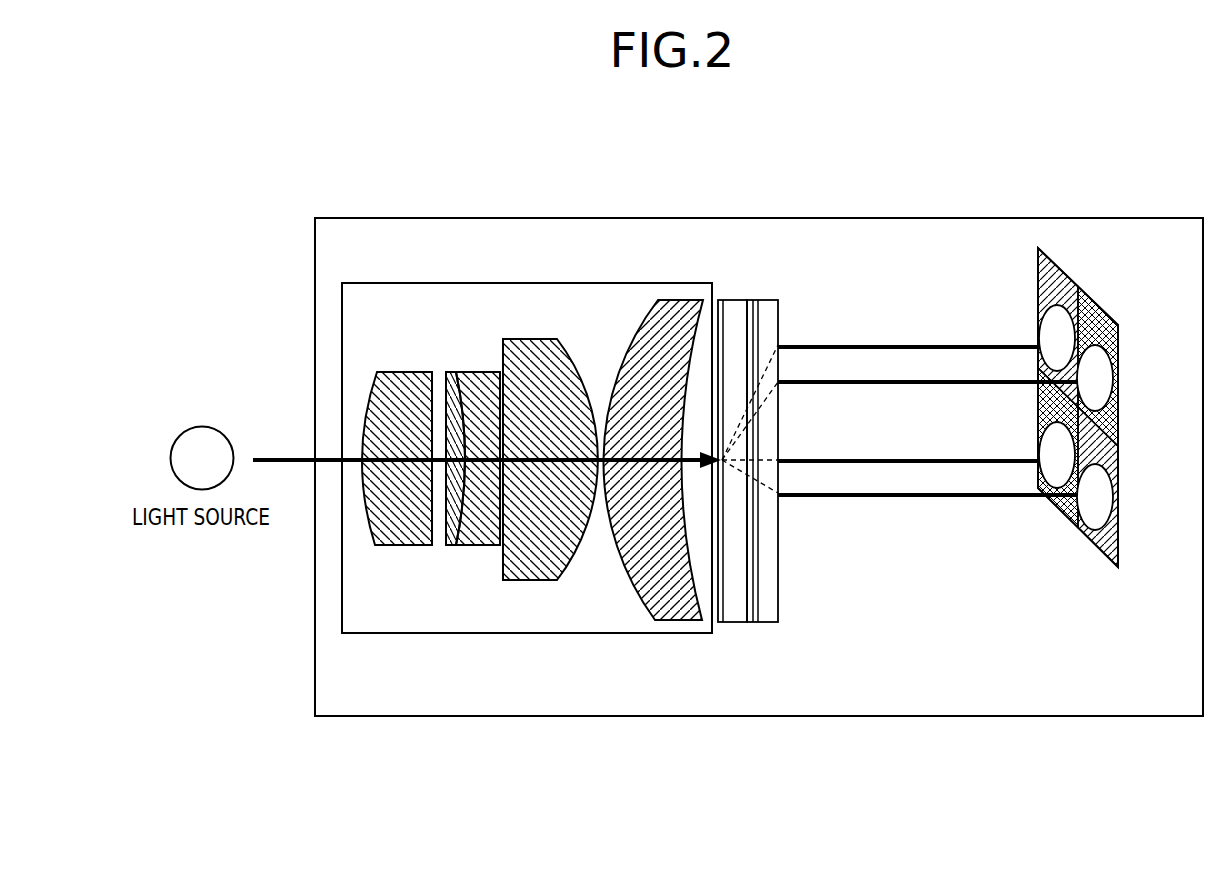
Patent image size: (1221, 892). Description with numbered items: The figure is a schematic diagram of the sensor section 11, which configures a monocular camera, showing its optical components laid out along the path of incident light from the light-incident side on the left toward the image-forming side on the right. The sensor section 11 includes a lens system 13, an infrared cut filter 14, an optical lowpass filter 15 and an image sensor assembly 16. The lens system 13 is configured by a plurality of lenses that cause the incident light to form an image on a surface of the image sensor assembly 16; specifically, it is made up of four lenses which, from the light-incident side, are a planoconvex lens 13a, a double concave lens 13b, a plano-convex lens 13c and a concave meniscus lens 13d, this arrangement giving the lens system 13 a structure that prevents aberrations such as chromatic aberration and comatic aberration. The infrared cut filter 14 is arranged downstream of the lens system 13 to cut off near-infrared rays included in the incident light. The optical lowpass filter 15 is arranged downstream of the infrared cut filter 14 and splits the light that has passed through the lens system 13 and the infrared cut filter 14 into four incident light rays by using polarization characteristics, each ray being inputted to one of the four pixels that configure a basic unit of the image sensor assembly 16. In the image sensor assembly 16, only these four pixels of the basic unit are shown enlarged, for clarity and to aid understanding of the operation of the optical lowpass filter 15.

The sensor section 11 is at (478, 218).
The lens system 13 is at (528, 283).
The planoconvex lens 13a is at (385, 546).
The double concave lens 13b is at (470, 545).
The plano-convex lens 13c is at (537, 580).
The concave meniscus lens 13d is at (685, 620).
The infrared cut filter 14 is at (720, 300).
The optical lowpass filter 15 is at (770, 300).
The image sensor assembly 16 is at (1082, 292).